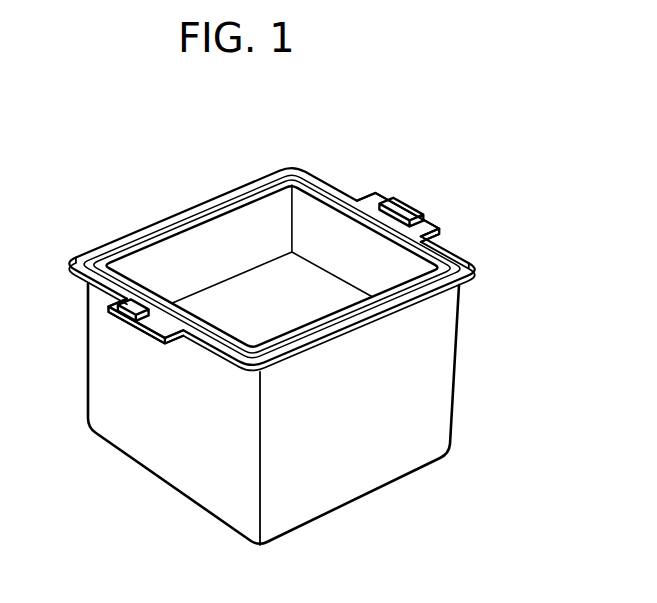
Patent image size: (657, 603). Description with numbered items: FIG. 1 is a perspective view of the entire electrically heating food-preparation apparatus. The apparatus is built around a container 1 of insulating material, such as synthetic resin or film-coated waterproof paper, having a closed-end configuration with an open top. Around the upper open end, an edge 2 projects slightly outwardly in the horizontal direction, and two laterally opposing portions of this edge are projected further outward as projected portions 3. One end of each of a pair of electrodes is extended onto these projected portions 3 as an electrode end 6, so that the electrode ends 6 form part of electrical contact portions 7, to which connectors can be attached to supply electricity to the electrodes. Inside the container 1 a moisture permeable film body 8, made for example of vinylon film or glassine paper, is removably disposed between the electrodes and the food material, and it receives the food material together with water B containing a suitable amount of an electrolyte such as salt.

The container 1 is at (443, 387).
The edge 2 is at (161, 222).
The projected portions 3 is at (110, 311).
The electrode end 6 is at (118, 323).
The electrical contact portion 7 is at (128, 344).
The moisture permeable film body 8 is at (233, 223).
The water B is at (270, 281).